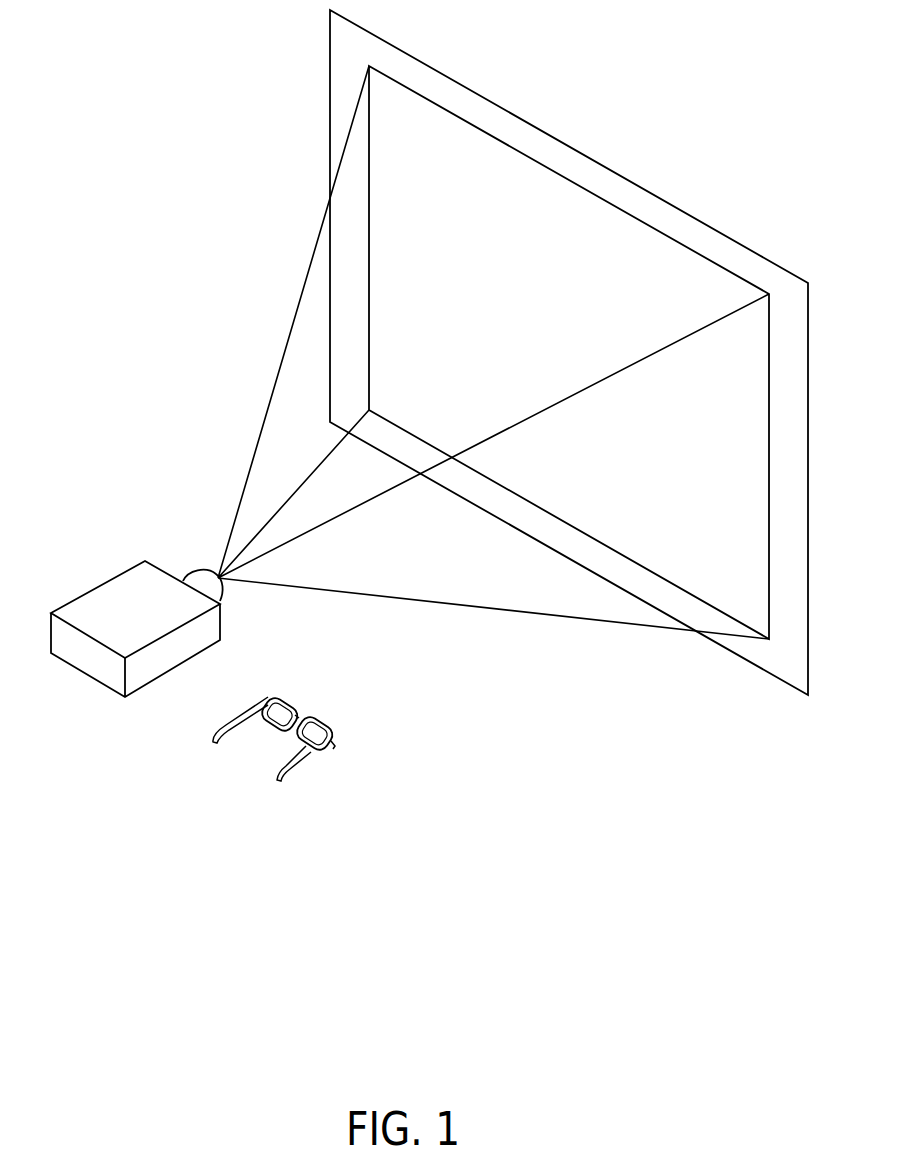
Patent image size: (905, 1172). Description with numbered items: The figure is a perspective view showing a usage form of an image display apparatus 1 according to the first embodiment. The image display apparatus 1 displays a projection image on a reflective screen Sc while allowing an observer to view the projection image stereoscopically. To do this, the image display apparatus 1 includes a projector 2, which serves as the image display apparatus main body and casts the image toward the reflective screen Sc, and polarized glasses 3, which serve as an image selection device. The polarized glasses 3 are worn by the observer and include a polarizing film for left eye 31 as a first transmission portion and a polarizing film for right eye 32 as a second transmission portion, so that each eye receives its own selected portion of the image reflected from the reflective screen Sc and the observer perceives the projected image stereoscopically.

The image display apparatus 1 is at (507, 641).
The projector 2 is at (107, 595).
The polarized glasses 3 is at (265, 756).
The polarizing film for left eye 31 is at (270, 717).
The polarizing film for right eye 32 is at (307, 736).
The reflective screen Sc is at (465, 100).